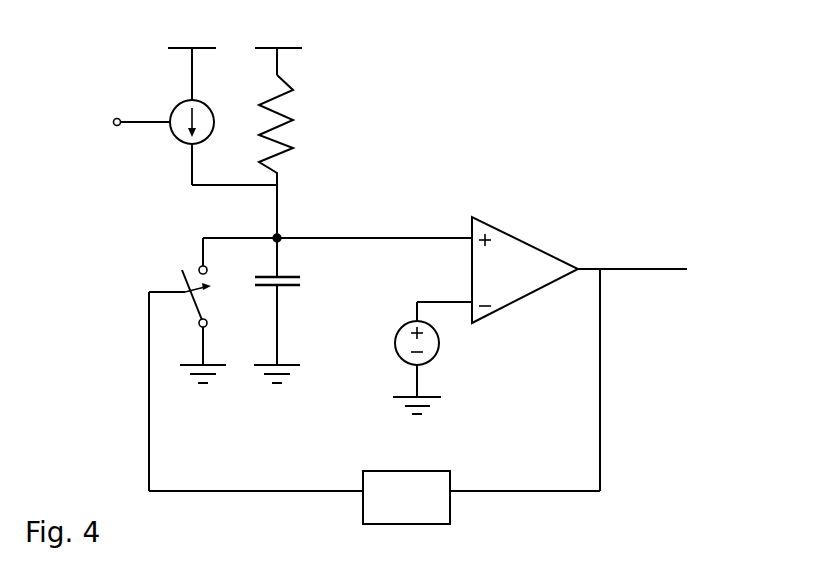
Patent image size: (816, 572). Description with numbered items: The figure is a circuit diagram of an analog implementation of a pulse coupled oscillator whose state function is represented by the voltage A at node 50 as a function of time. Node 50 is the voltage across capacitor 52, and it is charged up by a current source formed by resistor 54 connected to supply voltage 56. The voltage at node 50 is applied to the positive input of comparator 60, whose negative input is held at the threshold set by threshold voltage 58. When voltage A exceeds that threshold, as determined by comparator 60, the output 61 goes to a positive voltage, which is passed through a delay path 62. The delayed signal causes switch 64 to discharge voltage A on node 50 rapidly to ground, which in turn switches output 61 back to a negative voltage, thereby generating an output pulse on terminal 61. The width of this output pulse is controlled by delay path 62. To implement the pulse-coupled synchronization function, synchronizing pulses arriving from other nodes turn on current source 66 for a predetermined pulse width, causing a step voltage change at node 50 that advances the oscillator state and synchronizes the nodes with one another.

The node 50 is at (275, 237).
The capacitor 52 is at (290, 288).
The resistor 54 is at (293, 148).
The voltage 56 is at (285, 52).
The threshold voltage 58 is at (432, 350).
The comparator 60 is at (512, 253).
The output 61 is at (625, 268).
The delay path 62 is at (443, 480).
The switch 64 is at (197, 304).
The current source 66 is at (174, 108).